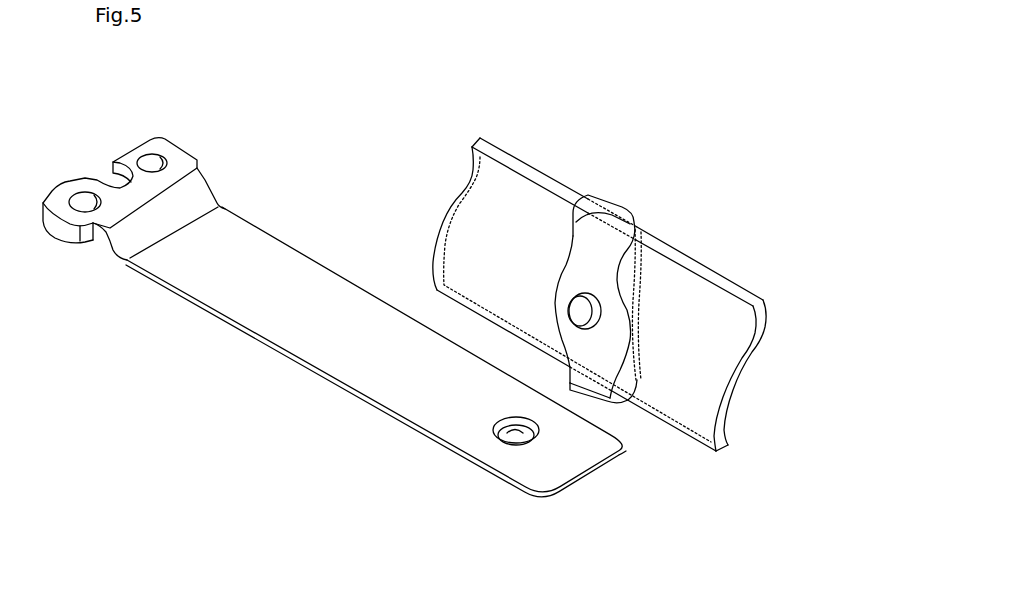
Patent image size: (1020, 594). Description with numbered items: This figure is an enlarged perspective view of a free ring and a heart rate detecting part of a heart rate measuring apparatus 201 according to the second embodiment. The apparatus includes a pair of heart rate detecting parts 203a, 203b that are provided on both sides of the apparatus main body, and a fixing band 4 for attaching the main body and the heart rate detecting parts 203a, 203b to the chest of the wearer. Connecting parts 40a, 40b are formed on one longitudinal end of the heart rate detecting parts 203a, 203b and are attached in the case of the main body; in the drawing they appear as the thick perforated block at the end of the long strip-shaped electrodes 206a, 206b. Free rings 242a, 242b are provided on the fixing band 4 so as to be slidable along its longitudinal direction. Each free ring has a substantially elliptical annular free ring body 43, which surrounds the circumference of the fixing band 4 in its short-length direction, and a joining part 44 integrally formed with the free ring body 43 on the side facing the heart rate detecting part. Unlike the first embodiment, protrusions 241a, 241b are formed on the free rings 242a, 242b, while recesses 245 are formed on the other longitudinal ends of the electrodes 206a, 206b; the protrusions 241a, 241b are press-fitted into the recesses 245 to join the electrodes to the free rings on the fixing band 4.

The connecting part 40a is at (148, 159).
The connecting part 40b is at (182, 150).
The heart rate measuring apparatus 201 is at (591, 262).
The protrusion 241a is at (565, 246).
The protrusion 241b is at (572, 292).
The free ring 242a is at (644, 177).
The free ring 242b is at (622, 198).
The free ring body 43 is at (637, 267).
The fixing band 4 is at (725, 271).
The joining part 44 is at (633, 328).
The heart rate detecting part 203a is at (359, 378).
The heart rate detecting part 203b is at (359, 378).
The electrode 206a is at (376, 407).
The electrode 206b is at (376, 407).
The recess 245 is at (513, 438).